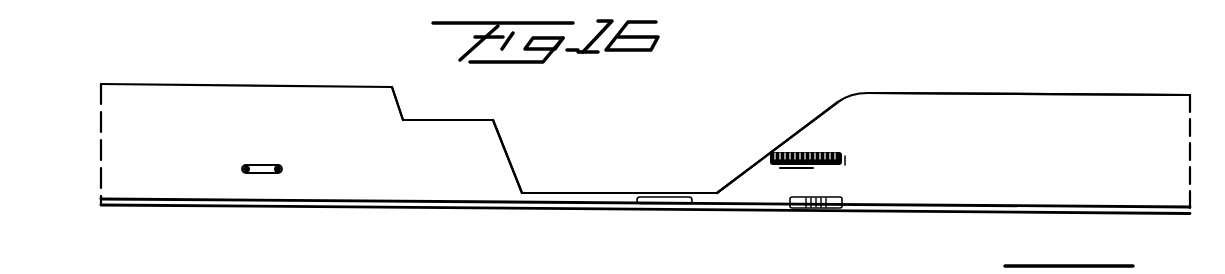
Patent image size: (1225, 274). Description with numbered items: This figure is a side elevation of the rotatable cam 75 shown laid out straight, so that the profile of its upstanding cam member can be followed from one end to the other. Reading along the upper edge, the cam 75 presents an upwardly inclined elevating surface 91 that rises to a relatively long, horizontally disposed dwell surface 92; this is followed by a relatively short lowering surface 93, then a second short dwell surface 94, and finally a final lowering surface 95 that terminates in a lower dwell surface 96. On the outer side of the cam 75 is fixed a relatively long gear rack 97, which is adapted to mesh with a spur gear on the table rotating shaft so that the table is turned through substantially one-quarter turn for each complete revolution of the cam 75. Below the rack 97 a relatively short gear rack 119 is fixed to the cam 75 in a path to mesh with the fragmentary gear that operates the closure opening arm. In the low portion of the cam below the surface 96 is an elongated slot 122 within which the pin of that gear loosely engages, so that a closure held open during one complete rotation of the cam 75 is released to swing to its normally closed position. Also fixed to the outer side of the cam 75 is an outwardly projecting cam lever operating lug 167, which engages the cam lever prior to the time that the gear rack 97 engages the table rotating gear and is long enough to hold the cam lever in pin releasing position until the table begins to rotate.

The cam lever operating lug 167 is at (265, 163).
The lowering surface 93 is at (401, 100).
The second short dwell surface 94 is at (468, 118).
The final lowering surface 95 is at (508, 148).
The lower dwell surface 96 is at (587, 193).
The elongated slot 122 is at (667, 195).
The elevating surface 91 is at (813, 120).
The gear rack 97 is at (825, 152).
The dwell surface 92 is at (933, 92).
The short gear rack 119 is at (815, 203).
The cam 75 is at (922, 192).